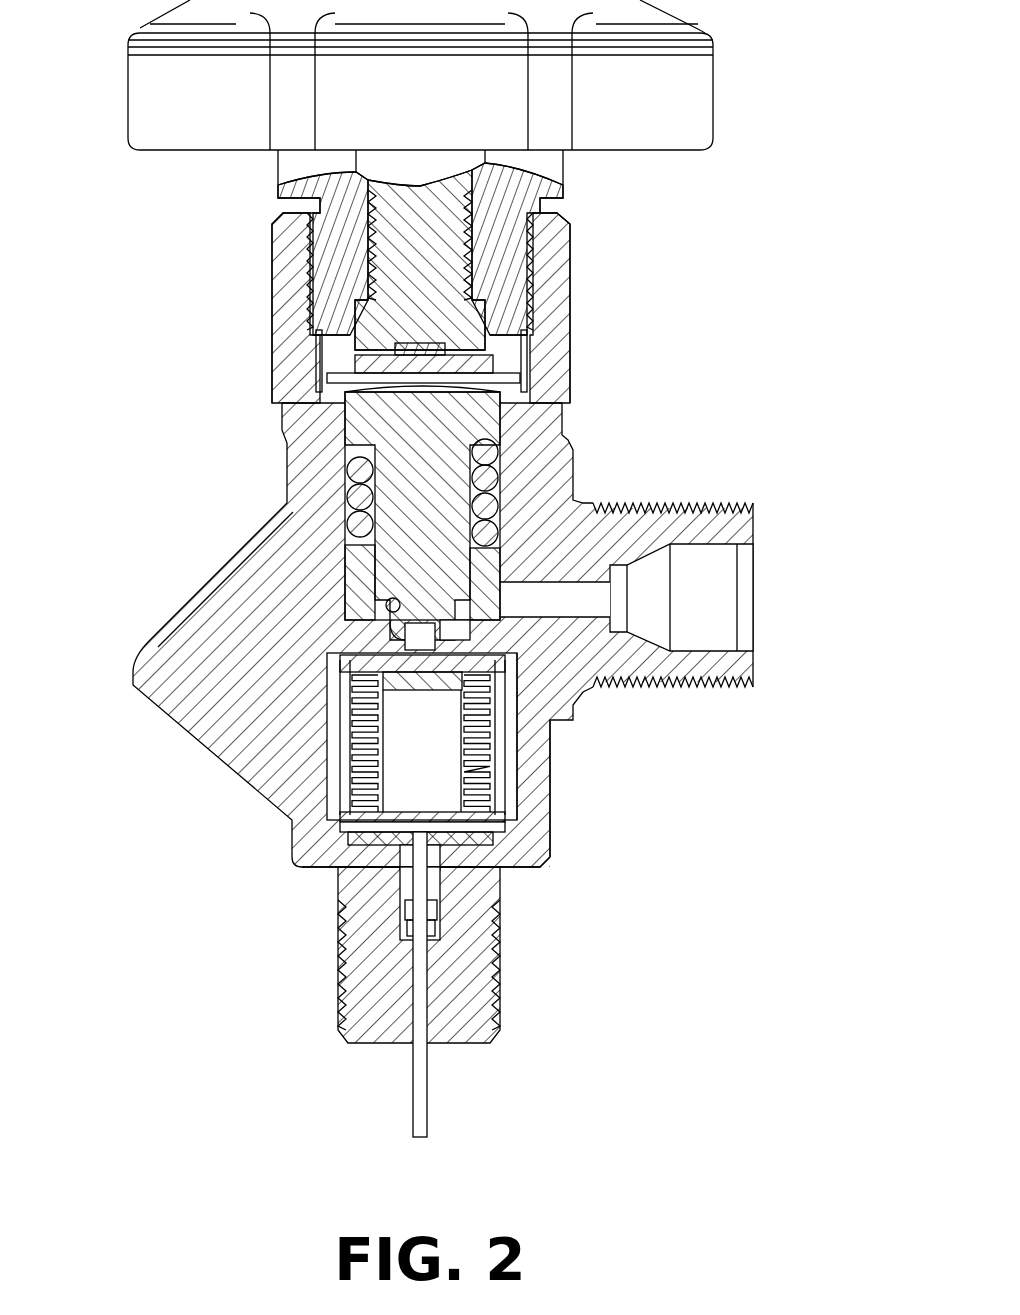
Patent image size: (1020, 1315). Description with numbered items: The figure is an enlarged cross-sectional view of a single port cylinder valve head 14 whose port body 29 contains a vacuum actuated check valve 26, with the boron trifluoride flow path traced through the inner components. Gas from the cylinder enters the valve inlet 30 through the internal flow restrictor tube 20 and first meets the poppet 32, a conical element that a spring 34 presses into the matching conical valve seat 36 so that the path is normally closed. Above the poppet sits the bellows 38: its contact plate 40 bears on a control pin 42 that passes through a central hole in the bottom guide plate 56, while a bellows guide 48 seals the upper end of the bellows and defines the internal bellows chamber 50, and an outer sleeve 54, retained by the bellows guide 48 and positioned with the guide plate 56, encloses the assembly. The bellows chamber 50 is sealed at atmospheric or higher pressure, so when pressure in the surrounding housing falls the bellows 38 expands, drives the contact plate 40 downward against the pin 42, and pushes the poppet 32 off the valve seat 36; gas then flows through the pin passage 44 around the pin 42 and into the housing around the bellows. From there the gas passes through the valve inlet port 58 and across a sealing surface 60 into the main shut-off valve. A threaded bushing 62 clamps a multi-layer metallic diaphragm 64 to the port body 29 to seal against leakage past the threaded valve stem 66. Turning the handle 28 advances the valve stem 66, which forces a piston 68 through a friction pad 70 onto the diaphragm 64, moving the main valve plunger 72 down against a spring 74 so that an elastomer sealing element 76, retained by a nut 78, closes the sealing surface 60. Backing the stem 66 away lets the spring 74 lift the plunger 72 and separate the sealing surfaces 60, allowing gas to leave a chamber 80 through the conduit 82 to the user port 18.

The single port cylinder valve head 14 is at (192, 451).
The user port 18 is at (725, 572).
The internal flow restrictor tube 20 is at (428, 1080).
The vacuum actuated check valve 26 is at (313, 737).
The handle 28 is at (718, 92).
The port body 29 is at (583, 773).
The valve inlet 30 is at (450, 1030).
The poppet 32 is at (437, 872).
The spring 34 is at (432, 945).
The valve seat 36 is at (455, 872).
The bellows 38 is at (485, 736).
The contact plate 40 is at (525, 862).
The control pin 42 is at (470, 843).
The pin passage 44 is at (412, 878).
The bellows guide 48 is at (460, 662).
The bellows chamber 50 is at (402, 752).
The outer sleeve 54 is at (350, 762).
The bottom guide plate 56 is at (367, 818).
The valve inlet port 58 is at (420, 640).
The sealing surface 60 is at (395, 640).
The threaded bushing 62 is at (345, 272).
The multi-layer metallic diaphragm 64 is at (330, 375).
The valve stem 66 is at (400, 238).
The piston 68 is at (478, 362).
The friction pad 70 is at (425, 352).
The main valve plunger 72 is at (400, 436).
The spring 74 is at (545, 455).
The elastomer sealing element 76 is at (398, 598).
The nut 78 is at (355, 592).
The chamber 80 is at (478, 622).
The conduit 82 is at (548, 580).